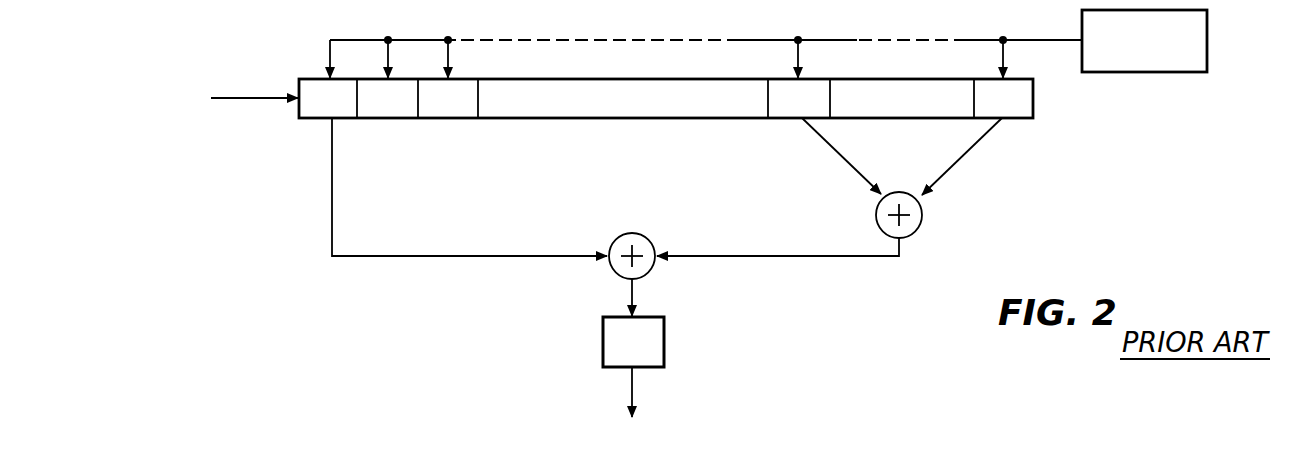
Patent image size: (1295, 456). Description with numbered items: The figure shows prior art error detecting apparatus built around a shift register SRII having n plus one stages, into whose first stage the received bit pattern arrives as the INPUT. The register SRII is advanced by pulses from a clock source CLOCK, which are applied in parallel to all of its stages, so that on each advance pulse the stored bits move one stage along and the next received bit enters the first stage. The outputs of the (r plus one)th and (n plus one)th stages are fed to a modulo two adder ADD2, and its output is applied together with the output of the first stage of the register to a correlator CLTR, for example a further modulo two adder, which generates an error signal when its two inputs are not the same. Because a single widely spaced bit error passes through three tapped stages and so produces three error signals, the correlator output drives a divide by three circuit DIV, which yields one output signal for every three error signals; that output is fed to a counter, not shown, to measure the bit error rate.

The input INPUT is at (212, 99).
The clock source CLOCK is at (768, 44).
The shift register SRII is at (494, 118).
The modulo 2 adder ADD2 is at (908, 178).
The correlator CLTR is at (654, 267).
The divide by three circuit DIV is at (664, 335).